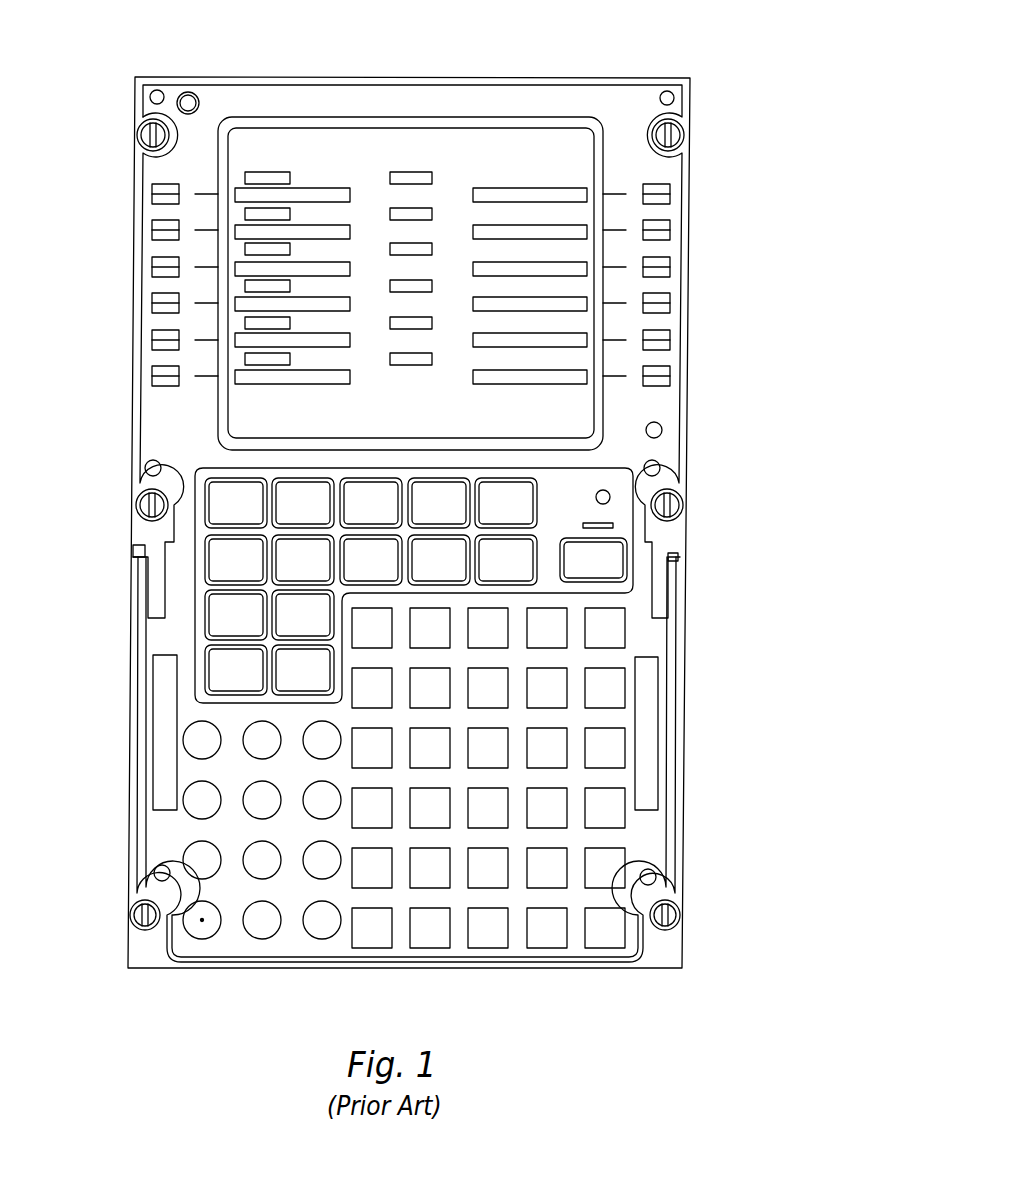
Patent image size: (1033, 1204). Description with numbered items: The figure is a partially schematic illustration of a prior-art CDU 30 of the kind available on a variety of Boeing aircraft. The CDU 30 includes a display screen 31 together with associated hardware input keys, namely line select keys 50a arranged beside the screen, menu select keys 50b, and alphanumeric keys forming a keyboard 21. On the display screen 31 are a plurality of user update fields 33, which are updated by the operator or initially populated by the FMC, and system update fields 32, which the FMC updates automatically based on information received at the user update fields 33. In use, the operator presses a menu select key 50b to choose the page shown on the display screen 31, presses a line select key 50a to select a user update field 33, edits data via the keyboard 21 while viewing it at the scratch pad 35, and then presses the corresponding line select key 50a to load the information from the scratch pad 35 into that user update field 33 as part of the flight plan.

The CDU 30 is at (715, 32).
The display screen 31 is at (600, 127).
The system update fields 32 is at (432, 173).
The user update fields 33 is at (237, 268).
The scratch pad 35 is at (248, 422).
The line select keys 50a is at (152, 267).
The menu select keys 50b is at (205, 510).
The keyboard 21 is at (642, 835).